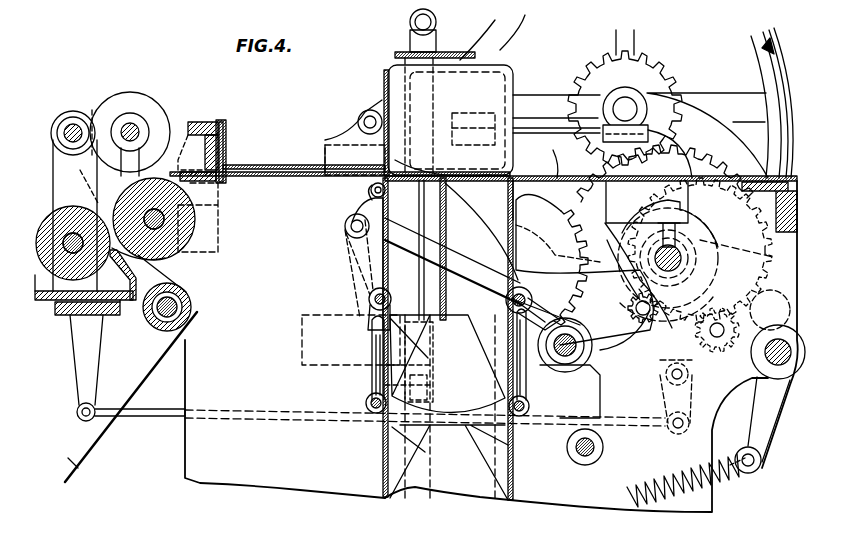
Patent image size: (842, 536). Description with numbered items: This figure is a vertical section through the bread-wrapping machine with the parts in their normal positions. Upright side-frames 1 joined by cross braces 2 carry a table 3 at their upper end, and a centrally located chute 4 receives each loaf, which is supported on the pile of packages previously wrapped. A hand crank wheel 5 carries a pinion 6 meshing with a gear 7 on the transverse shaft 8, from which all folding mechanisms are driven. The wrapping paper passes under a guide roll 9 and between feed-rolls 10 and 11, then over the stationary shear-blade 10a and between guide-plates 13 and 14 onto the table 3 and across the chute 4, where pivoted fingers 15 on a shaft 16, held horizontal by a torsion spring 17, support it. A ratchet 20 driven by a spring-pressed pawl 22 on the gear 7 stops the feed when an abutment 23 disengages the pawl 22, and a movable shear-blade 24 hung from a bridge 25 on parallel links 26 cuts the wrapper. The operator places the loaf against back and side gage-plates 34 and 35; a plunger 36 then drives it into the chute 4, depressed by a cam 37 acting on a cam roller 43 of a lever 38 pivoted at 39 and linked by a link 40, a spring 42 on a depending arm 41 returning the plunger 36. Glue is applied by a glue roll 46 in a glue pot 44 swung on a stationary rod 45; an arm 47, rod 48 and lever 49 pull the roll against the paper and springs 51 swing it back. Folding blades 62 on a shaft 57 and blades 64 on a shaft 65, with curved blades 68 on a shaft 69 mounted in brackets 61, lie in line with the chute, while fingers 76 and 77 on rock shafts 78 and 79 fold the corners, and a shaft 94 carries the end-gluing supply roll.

The side-frame 1 is at (285, 419).
The cross brace 2 is at (777, 104).
The table 3 is at (746, 178).
The chute 4 is at (514, 462).
The crank wheel 5 is at (752, 62).
The pinion 6 is at (625, 97).
The gear 7 is at (665, 173).
The transverse shaft 8 is at (675, 250).
The guide roll 9 is at (160, 330).
The feed-roll 10 is at (186, 248).
The stationary shear-blade 10a is at (218, 200).
The feed-roll 11 is at (150, 104).
The guide-plate 13 is at (285, 177).
The guide-plate 14 is at (295, 165).
The finger 15 is at (440, 178).
The shaft 16 is at (370, 190).
The spring 17 is at (352, 205).
The ratchet 20 is at (712, 235).
The spring-pressed pawl 22 is at (718, 352).
The abutment 23 is at (771, 309).
The movable shear-blade 24 is at (226, 150).
The bridge 25 is at (205, 125).
The parallel link 26 is at (222, 125).
The back gage-plate 34 is at (385, 88).
The side gage-plate 35 is at (512, 72).
The plunger 36 is at (436, 40).
The cam 37 is at (700, 250).
The lever 38 is at (453, 272).
The pivot 39 is at (778, 367).
The link 40 is at (355, 274).
The depending arm 41 is at (769, 419).
The spring 42 is at (725, 480).
The cam roller 43 is at (700, 304).
The glue pot 44 is at (46, 302).
The stationary rod 45 is at (75, 123).
The glue roll 46 is at (60, 210).
The arm 47 is at (72, 378).
The rod 48 is at (176, 410).
The lever 49 is at (666, 410).
The spring 51 is at (66, 112).
The shaft 57 is at (506, 300).
The bracket 61 is at (522, 342).
The blade 62 is at (495, 215).
The blade 64 is at (352, 238).
The shaft 65 is at (369, 299).
The curved blade 68 is at (594, 272).
The shaft 69 is at (569, 368).
The finger 76 is at (526, 372).
The finger 77 is at (370, 378).
The rock shaft 78 is at (532, 406).
The rock shaft 79 is at (365, 405).
The shaft 94 is at (595, 447).